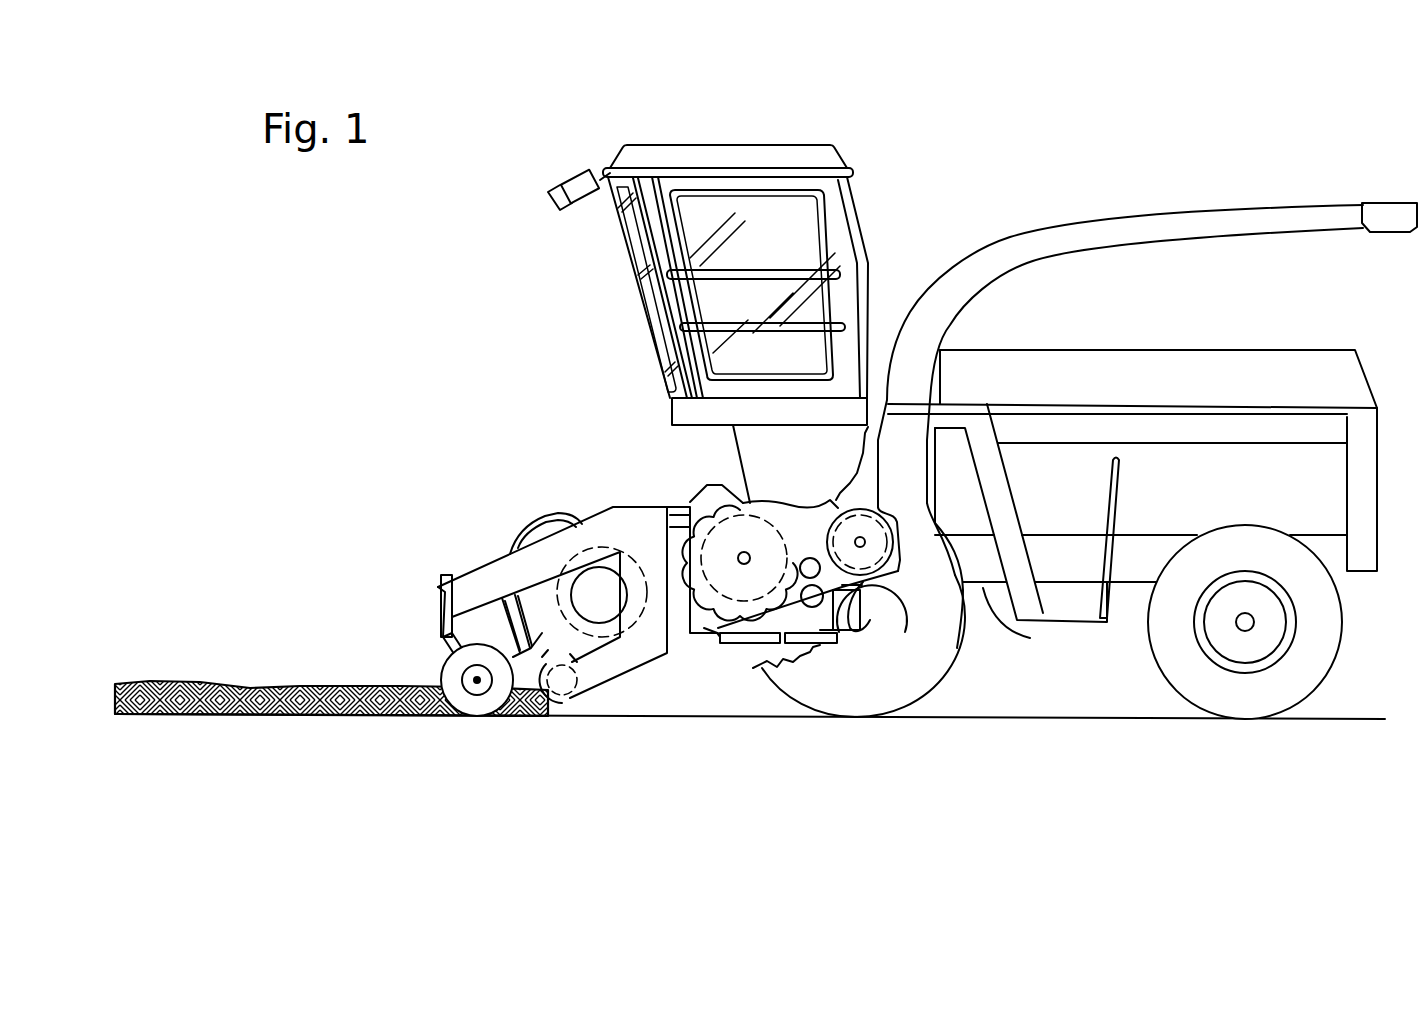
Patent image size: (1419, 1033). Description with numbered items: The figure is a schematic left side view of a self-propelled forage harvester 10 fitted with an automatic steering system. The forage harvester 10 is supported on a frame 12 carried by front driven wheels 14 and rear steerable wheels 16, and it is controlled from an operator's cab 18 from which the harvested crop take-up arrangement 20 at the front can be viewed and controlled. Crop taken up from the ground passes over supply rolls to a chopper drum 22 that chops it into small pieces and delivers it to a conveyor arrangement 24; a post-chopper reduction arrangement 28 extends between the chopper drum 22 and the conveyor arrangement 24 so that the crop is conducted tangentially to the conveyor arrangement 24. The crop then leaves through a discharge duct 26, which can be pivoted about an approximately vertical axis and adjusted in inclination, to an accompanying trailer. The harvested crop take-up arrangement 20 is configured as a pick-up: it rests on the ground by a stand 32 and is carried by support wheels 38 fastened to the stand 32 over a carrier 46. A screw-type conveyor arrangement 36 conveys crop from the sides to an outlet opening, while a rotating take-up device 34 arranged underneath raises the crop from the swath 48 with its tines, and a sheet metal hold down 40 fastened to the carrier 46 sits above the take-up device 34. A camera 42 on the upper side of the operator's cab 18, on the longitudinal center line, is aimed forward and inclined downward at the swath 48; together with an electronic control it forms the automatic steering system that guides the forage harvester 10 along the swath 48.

The forage harvester 10 is at (496, 324).
The frame 12 is at (1030, 638).
The front driven wheels 14 is at (940, 675).
The rear steerable wheels 16 is at (1212, 703).
The operator's cab 18 is at (637, 245).
The harvested crop take-up arrangement 20 is at (427, 537).
The chopper drum 22 is at (738, 623).
The conveyor arrangement 24 is at (829, 494).
The discharge duct 26 is at (1033, 232).
The post-chopper reduction arrangement 28 is at (817, 626).
The stand 32 is at (628, 642).
The take-up device 34 is at (563, 704).
The conveyor arrangement 36 is at (565, 598).
The support wheels 38 is at (461, 706).
The hold down 40 is at (517, 643).
The camera 42 is at (566, 177).
The carrier 46 is at (440, 595).
The swath 48 is at (253, 687).